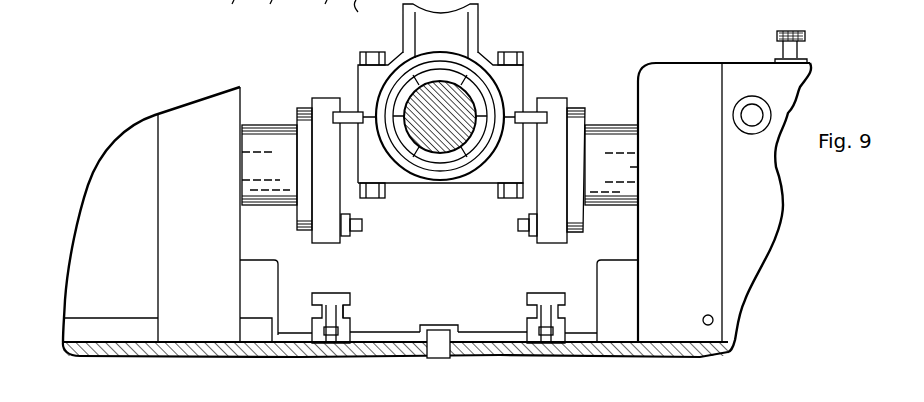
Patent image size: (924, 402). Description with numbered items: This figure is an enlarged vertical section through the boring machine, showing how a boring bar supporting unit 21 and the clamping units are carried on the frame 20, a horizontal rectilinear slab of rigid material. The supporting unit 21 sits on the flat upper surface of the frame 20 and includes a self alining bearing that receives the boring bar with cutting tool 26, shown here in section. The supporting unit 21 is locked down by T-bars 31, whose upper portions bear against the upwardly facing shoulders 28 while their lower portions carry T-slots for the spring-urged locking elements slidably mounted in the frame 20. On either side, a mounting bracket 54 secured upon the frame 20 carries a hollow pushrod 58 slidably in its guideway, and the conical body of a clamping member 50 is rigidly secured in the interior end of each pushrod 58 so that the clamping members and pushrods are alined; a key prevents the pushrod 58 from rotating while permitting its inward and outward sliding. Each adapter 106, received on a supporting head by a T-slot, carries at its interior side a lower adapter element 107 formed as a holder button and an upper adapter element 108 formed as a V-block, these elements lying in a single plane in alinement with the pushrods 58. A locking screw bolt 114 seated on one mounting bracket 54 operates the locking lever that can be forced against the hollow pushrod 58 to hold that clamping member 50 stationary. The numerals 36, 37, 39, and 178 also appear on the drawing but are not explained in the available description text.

The frame 20 is at (492, 342).
The boring bar supporting unit 21 is at (440, 157).
The boring bar with cutting tool 26 is at (440, 142).
The upwardly facing shoulder 28 is at (345, 312).
The T-bar 31 is at (328, 302).
The member 36 is at (229, 13).
The member 37 is at (322, 13).
The member 39 is at (321, 13).
The clamping member 50 is at (297, 118).
The mounting bracket 54 is at (155, 155).
The hollow pushrod 58 is at (267, 200).
The adapter 106 is at (553, 108).
The lower adapter element 107 is at (518, 226).
The upper adapter element 108 is at (350, 113).
The locking screw bolt 114 is at (796, 52).
The neck 178 is at (477, 37).